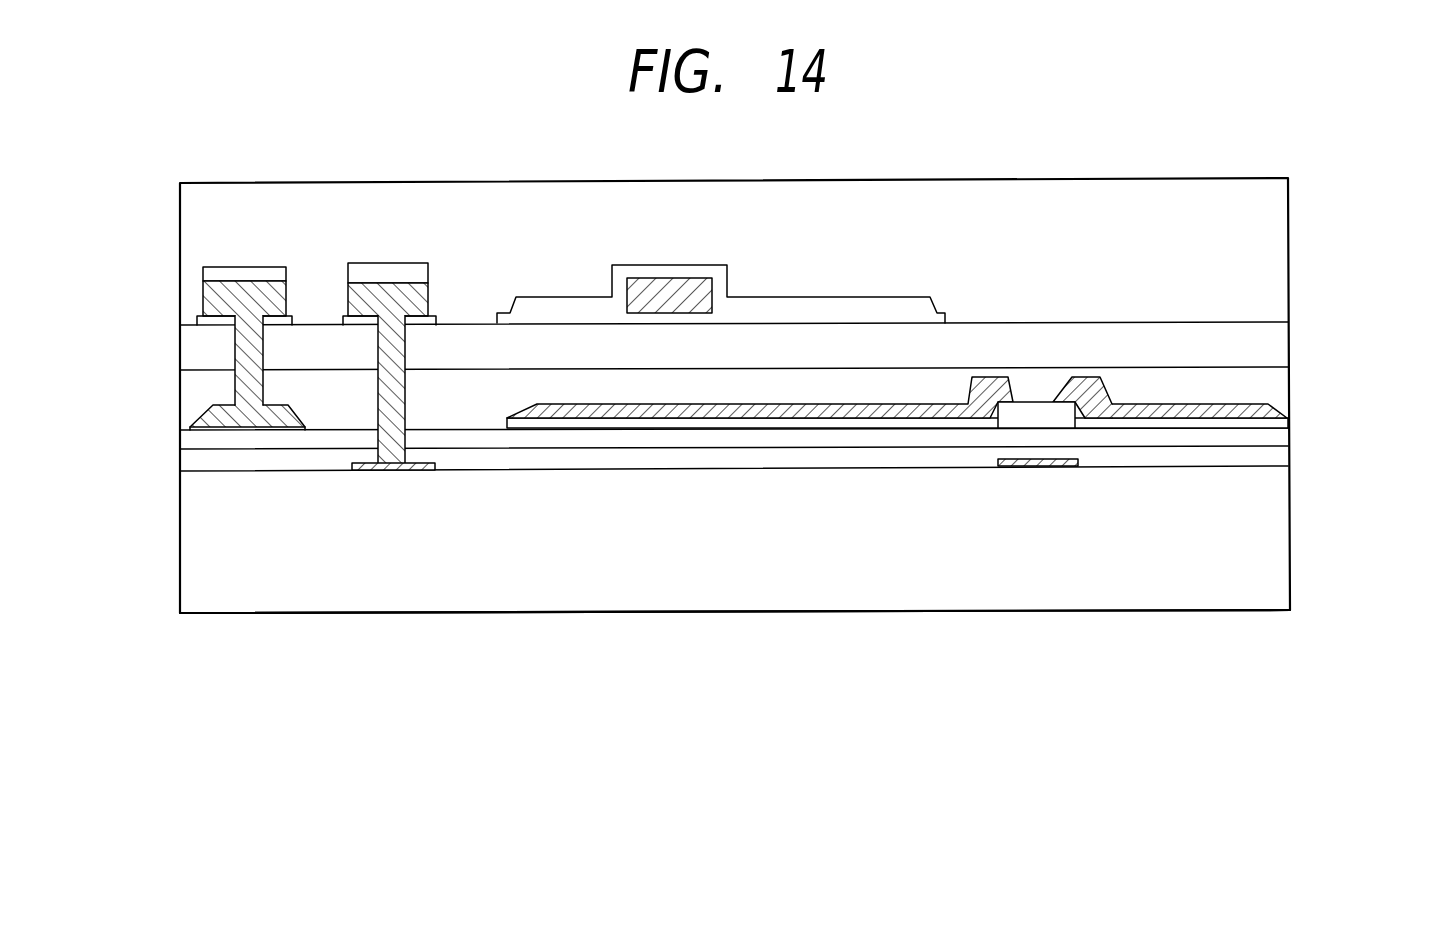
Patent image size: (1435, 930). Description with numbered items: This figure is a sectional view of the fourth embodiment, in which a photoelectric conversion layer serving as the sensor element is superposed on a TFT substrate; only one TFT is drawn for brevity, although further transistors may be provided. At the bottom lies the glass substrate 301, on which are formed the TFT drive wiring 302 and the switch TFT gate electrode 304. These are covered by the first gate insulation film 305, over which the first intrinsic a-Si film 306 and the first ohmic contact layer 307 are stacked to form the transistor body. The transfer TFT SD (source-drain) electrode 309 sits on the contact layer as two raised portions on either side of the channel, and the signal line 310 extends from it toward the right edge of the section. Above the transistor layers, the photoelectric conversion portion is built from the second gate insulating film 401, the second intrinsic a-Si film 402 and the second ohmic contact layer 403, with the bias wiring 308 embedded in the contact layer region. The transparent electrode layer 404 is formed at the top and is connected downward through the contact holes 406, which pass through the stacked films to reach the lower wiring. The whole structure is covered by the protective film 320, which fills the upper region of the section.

The glass substrate 301 is at (1242, 528).
The TFT drive wiring 302 is at (393, 471).
The switch TFT gate electrode 304 is at (1040, 467).
The first gate insulation film 305 is at (523, 457).
The first intrinsic a-Si film 306 is at (618, 437).
The first ohmic contact layer 307 is at (657, 423).
The bias wiring 308 is at (663, 285).
The transfer TFT SD electrode 309 is at (1090, 377).
The signal line 310 is at (1270, 402).
The protective film 320 is at (1218, 215).
The second gate insulating film 401 is at (1263, 382).
The second intrinsic a-Si film 402 is at (1267, 338).
The second ohmic contact layer 403 is at (833, 315).
The transparent electrode layer 404 is at (622, 278).
The contact holes 406 is at (385, 400).